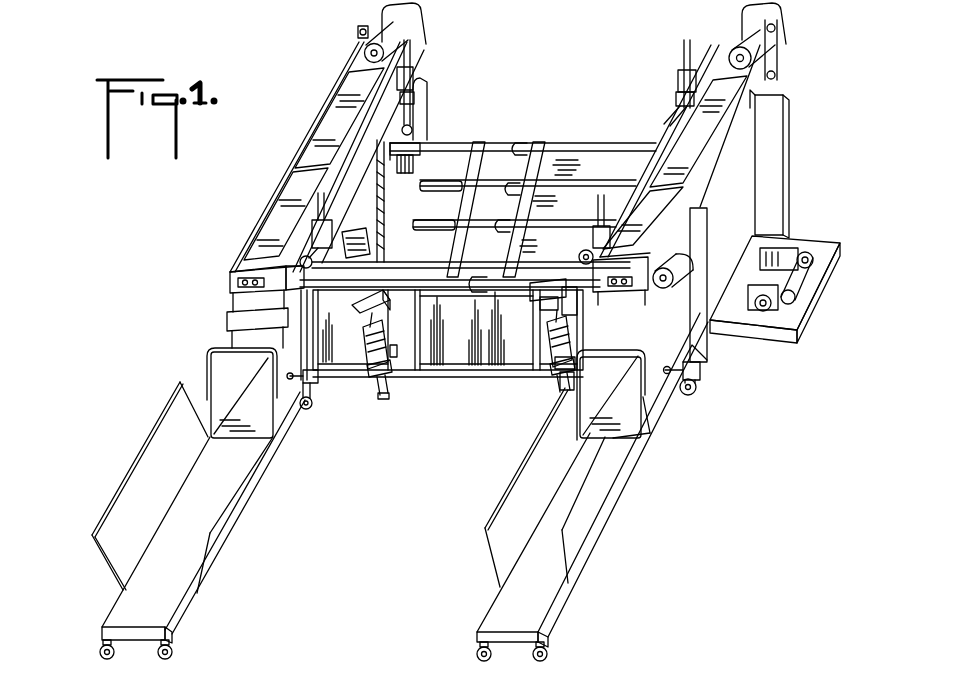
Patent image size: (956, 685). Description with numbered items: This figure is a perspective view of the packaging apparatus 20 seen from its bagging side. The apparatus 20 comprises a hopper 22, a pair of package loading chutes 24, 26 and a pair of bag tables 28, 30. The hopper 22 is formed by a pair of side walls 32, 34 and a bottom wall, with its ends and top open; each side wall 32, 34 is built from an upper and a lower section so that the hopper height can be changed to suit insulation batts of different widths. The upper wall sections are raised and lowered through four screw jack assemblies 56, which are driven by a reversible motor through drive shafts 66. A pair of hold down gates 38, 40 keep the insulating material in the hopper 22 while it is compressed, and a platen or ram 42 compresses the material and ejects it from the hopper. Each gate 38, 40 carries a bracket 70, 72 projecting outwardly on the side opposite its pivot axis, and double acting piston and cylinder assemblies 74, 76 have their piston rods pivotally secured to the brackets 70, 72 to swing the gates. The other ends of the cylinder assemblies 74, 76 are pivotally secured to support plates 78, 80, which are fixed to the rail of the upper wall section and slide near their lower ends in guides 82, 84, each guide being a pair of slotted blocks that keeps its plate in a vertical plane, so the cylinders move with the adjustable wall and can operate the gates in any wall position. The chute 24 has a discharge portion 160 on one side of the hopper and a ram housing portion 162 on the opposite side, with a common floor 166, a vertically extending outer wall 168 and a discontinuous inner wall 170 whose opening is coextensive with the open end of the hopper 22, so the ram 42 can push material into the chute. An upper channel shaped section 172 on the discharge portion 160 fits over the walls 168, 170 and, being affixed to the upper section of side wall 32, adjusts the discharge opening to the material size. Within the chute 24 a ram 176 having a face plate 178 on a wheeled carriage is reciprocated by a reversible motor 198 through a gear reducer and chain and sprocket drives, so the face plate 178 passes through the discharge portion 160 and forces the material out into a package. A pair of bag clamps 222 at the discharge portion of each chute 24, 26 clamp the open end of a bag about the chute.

The apparatus 20 is at (581, 76).
The hopper 22 is at (501, 201).
The package loading chute 24 is at (156, 330).
The package loading chute 26 is at (729, 387).
The bag table 28 is at (98, 580).
The bag table 30 is at (574, 616).
The side wall 32 is at (461, 356).
The side wall 34 is at (616, 166).
The hold down gate 38 is at (450, 150).
The hold down gate 40 is at (520, 145).
The platen or ram 42 is at (568, 165).
The screw jack assemblies 56 is at (416, 74).
The drive shafts 66 is at (381, 150).
The bracket 70 is at (360, 310).
The bracket 72 is at (538, 309).
The double acting piston and cylinder assembly 74 is at (370, 343).
The double acting piston and cylinder assembly 76 is at (556, 370).
The support plate 78 is at (383, 312).
The support plate 80 is at (562, 315).
The guide 82 is at (389, 352).
The guide 84 is at (566, 364).
The discharge portion 160 is at (191, 364).
The ram housing portion 162 is at (443, 104).
The common floor 166 is at (240, 413).
The outer wall 168 is at (221, 384).
The discontinuous inner wall 170 is at (312, 406).
The upper channel shaped section 172 is at (236, 348).
The ram 176 is at (388, 192).
The face plate 178 is at (351, 240).
The reversible motor 198 is at (408, 15).
The bag clamps 222 is at (316, 376).